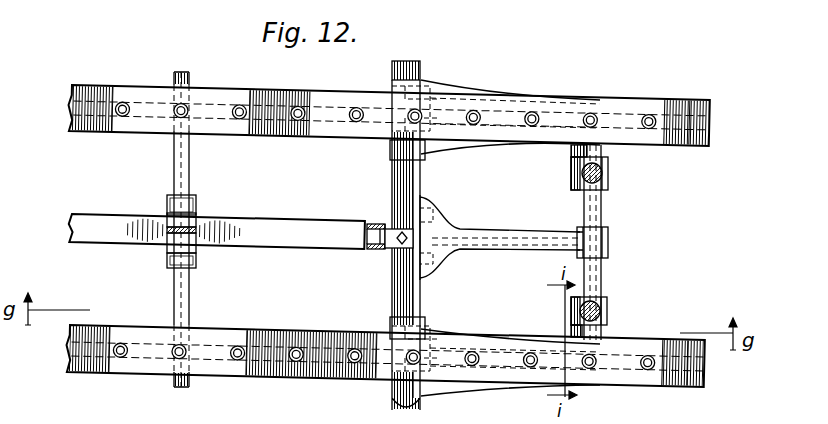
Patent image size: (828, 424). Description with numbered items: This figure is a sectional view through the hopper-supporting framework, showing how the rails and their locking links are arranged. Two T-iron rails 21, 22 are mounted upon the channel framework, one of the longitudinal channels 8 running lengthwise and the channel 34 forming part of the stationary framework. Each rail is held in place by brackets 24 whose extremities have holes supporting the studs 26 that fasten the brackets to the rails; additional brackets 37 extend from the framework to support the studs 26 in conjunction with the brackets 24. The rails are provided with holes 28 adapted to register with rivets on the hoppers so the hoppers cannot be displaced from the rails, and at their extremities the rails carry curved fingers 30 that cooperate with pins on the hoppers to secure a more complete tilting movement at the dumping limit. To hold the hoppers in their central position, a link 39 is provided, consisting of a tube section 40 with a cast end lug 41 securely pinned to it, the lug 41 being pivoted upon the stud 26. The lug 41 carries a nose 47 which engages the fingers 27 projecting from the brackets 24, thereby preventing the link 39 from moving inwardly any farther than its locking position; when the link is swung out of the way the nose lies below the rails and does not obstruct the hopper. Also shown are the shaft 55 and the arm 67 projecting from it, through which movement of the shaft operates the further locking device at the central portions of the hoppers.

The channel 8 is at (408, 64).
The rail 21 is at (325, 337).
The rail 22 is at (340, 128).
The bracket 24 is at (448, 140).
The stud 26 is at (612, 238).
The finger 27 is at (568, 148).
The hole 28 is at (298, 106).
The curved finger 30 is at (683, 108).
The channel 34 is at (370, 222).
The bracket 37 is at (462, 227).
The link 39 is at (600, 190).
The tube section 40 is at (607, 170).
The end lug 41 is at (603, 185).
The nose 47 is at (571, 180).
The shaft 55 is at (190, 77).
The arm 67 is at (193, 230).